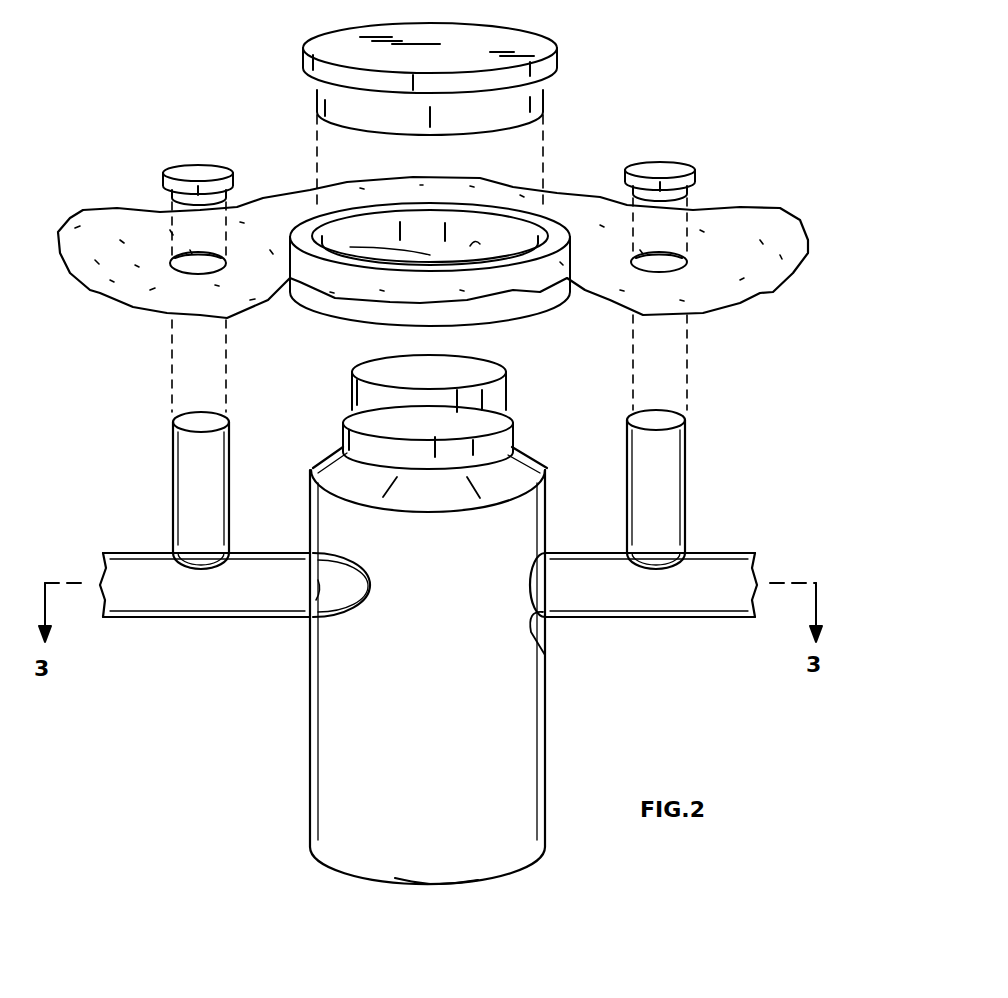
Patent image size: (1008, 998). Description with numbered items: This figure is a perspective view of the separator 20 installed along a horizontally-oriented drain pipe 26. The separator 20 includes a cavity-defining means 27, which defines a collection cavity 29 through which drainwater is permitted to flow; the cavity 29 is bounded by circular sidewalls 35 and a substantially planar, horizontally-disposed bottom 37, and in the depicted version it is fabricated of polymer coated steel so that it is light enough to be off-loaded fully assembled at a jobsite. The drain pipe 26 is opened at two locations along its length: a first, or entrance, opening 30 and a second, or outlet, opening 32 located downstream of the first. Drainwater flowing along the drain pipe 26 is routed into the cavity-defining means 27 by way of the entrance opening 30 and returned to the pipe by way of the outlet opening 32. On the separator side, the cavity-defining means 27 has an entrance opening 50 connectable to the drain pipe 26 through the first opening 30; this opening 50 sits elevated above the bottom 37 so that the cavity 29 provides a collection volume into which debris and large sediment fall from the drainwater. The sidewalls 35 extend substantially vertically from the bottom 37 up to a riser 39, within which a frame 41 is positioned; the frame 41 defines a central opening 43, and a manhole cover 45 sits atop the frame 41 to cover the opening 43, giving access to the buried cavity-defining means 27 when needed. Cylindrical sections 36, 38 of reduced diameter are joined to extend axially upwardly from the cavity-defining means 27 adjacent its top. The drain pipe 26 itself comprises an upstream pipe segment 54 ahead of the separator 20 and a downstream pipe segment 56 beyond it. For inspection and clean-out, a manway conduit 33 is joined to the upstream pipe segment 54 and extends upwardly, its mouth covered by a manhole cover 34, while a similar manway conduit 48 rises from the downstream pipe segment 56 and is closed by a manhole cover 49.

The separator 20 is at (477, 890).
The drain pipe 26 is at (130, 617).
The cavity-defining means 27 is at (563, 838).
The collection cavity 29 is at (335, 795).
The first opening 30 is at (320, 618).
The second opening 32 is at (543, 635).
The manway conduit 33 is at (173, 480).
The manhole cover 34 is at (165, 178).
The sidewalls 35 is at (515, 790).
The cylindrical section 36 is at (513, 437).
The bottom 37 is at (405, 883).
The cylindrical section 38 is at (495, 391).
The riser 39 is at (511, 230).
The frame 41 is at (477, 243).
The central opening 43 is at (350, 247).
The manhole cover 45 is at (556, 52).
The manway conduit 48 is at (688, 482).
The manhole cover 49 is at (660, 162).
The entrance opening 50 is at (320, 577).
The upstream pipe segment 54 is at (185, 617).
The downstream pipe segment 56 is at (599, 617).